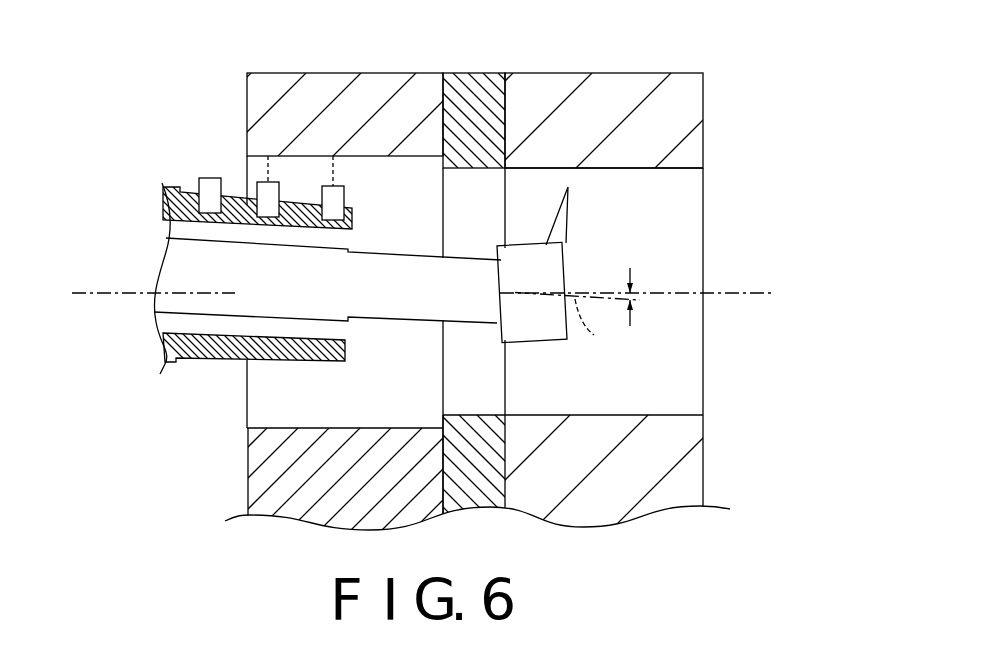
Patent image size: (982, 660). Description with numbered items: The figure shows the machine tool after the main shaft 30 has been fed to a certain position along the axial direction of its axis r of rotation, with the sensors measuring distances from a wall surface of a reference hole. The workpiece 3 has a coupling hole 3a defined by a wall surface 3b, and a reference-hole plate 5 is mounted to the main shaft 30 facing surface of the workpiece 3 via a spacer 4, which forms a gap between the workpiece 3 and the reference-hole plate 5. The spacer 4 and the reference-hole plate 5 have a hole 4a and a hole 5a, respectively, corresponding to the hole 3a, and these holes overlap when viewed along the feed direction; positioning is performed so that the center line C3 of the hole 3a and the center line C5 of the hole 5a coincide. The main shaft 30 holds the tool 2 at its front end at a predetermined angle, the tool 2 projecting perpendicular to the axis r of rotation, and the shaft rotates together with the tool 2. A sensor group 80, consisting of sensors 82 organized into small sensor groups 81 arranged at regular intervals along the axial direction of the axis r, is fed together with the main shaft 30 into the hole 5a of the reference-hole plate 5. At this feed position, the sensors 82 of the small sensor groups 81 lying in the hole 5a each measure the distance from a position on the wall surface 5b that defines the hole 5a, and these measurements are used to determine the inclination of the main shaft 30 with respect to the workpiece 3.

The tool 2 is at (567, 220).
The workpiece 3 is at (614, 87).
The hole 3a is at (680, 208).
The wall surface 3b is at (665, 415).
The spacer 4 is at (471, 92).
The hole 4a is at (482, 373).
The reference-hole plate 5 is at (363, 90).
The hole 5a is at (273, 382).
The wall surface 5b is at (280, 428).
The main shaft 30 is at (400, 287).
The sensor group 80 is at (232, 158).
The small sensor groups 81 is at (192, 181).
The sensors 82 is at (333, 205).
The center line C3 is at (743, 293).
The center line C5 is at (120, 290).
The axis of rotation r is at (589, 326).